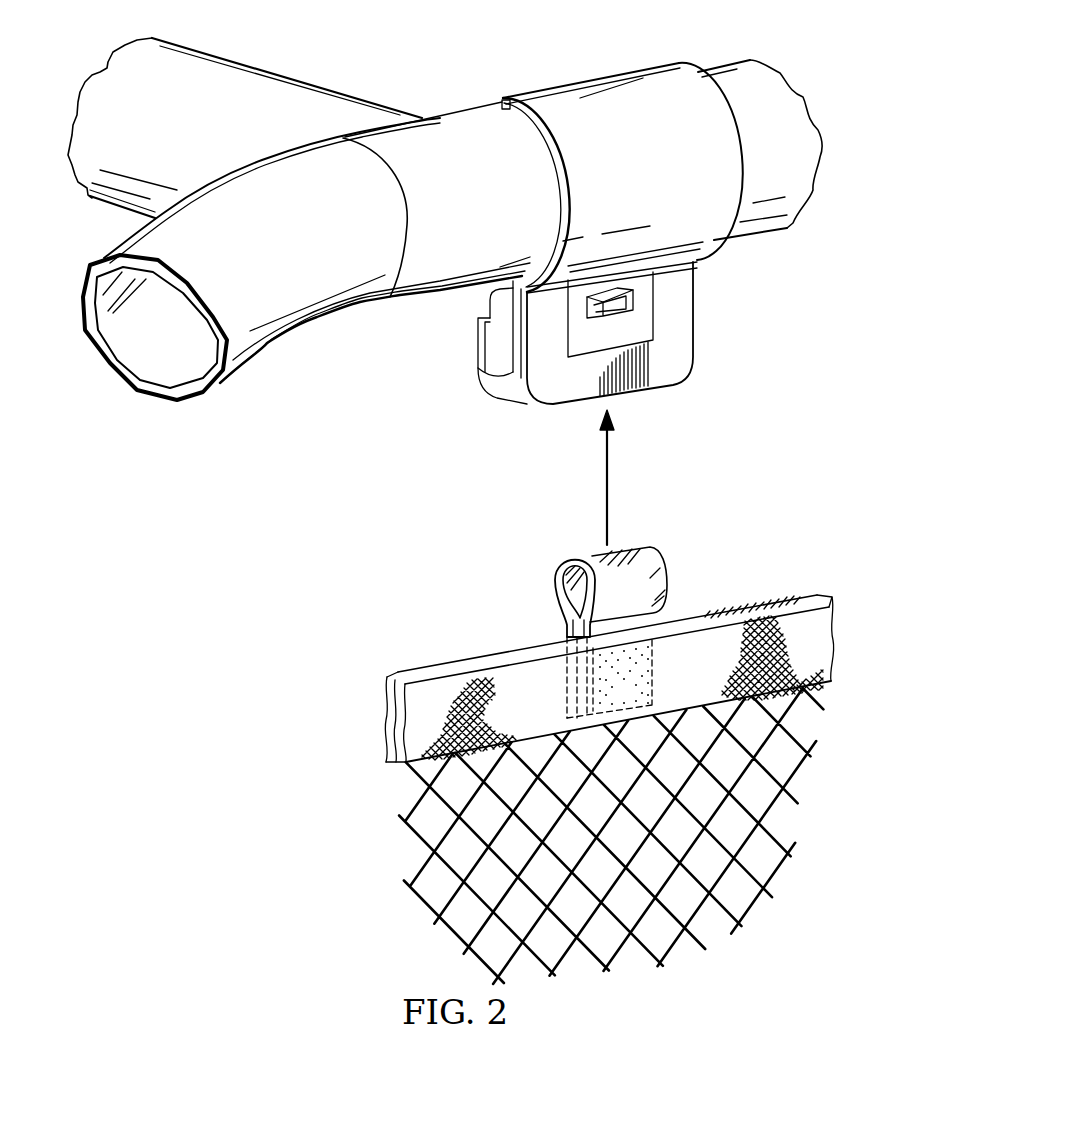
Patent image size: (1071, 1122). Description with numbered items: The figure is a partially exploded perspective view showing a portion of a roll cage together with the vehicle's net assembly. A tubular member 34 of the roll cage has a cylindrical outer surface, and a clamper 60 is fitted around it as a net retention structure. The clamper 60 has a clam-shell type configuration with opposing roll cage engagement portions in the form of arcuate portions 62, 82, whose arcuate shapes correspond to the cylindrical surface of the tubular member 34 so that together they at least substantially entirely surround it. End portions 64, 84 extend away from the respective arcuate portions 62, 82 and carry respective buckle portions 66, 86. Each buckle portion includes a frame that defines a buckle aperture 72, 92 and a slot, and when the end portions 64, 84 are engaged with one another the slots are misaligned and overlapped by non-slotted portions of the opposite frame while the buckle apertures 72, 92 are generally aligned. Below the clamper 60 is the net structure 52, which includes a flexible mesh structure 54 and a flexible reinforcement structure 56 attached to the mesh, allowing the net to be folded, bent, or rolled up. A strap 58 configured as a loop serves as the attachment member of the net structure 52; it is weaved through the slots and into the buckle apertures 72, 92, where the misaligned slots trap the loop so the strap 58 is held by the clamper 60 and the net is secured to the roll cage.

The tubular member 34 is at (721, 60).
The net structure 52 is at (561, 765).
The mesh structure 54 is at (480, 926).
The reinforcement structure 56 is at (385, 718).
The strap 58 is at (555, 598).
The clamper 60 is at (586, 234).
The arcuate portion 62 is at (478, 98).
The end portion 64 is at (585, 364).
The buckle portion 66 is at (492, 345).
The buckle aperture 72 is at (634, 329).
The arcuate portion 82 is at (560, 119).
The end portion 84 is at (529, 409).
The buckle portion 86 is at (512, 385).
The buckle aperture 92 is at (650, 332).